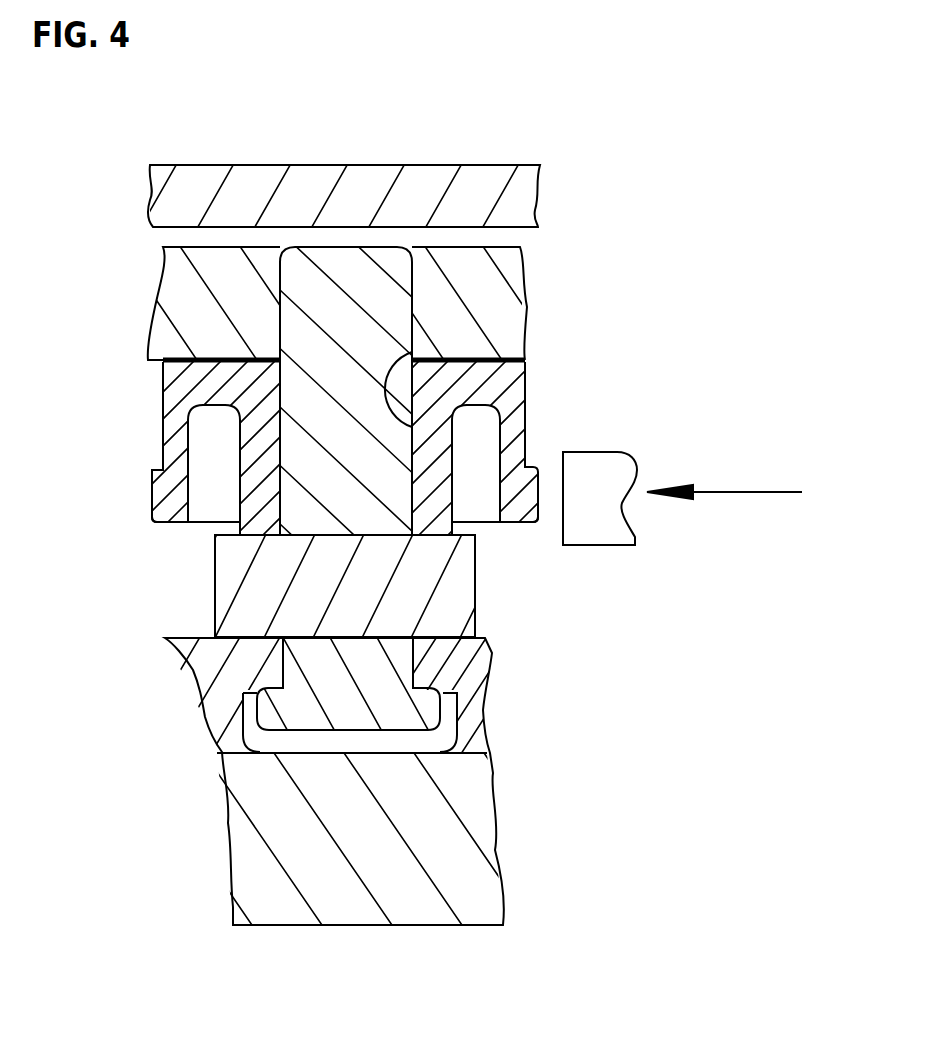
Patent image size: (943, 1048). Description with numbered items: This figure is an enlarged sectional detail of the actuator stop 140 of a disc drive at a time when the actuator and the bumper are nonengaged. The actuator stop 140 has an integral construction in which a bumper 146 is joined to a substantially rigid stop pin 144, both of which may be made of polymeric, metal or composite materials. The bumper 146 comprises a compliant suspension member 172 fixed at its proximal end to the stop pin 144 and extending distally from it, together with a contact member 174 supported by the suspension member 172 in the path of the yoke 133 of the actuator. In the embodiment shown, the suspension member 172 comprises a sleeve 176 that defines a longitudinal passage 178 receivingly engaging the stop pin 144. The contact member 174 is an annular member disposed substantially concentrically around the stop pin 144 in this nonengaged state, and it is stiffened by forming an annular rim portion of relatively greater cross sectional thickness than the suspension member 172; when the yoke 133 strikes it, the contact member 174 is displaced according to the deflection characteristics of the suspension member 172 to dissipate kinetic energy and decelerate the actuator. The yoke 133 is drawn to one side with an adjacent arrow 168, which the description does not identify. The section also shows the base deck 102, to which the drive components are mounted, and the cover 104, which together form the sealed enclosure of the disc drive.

The base deck 102 is at (335, 925).
The cover 104 is at (272, 165).
The yoke 133 is at (603, 482).
The actuator stop 140 is at (515, 680).
The stop pin 144 is at (345, 253).
The bumper 146 is at (528, 388).
The insertion direction arrow 168 is at (747, 488).
The suspension member 172 is at (177, 422).
The contact member 174 is at (172, 505).
The sleeve 176 is at (433, 483).
The longitudinal passage 178 is at (412, 352).